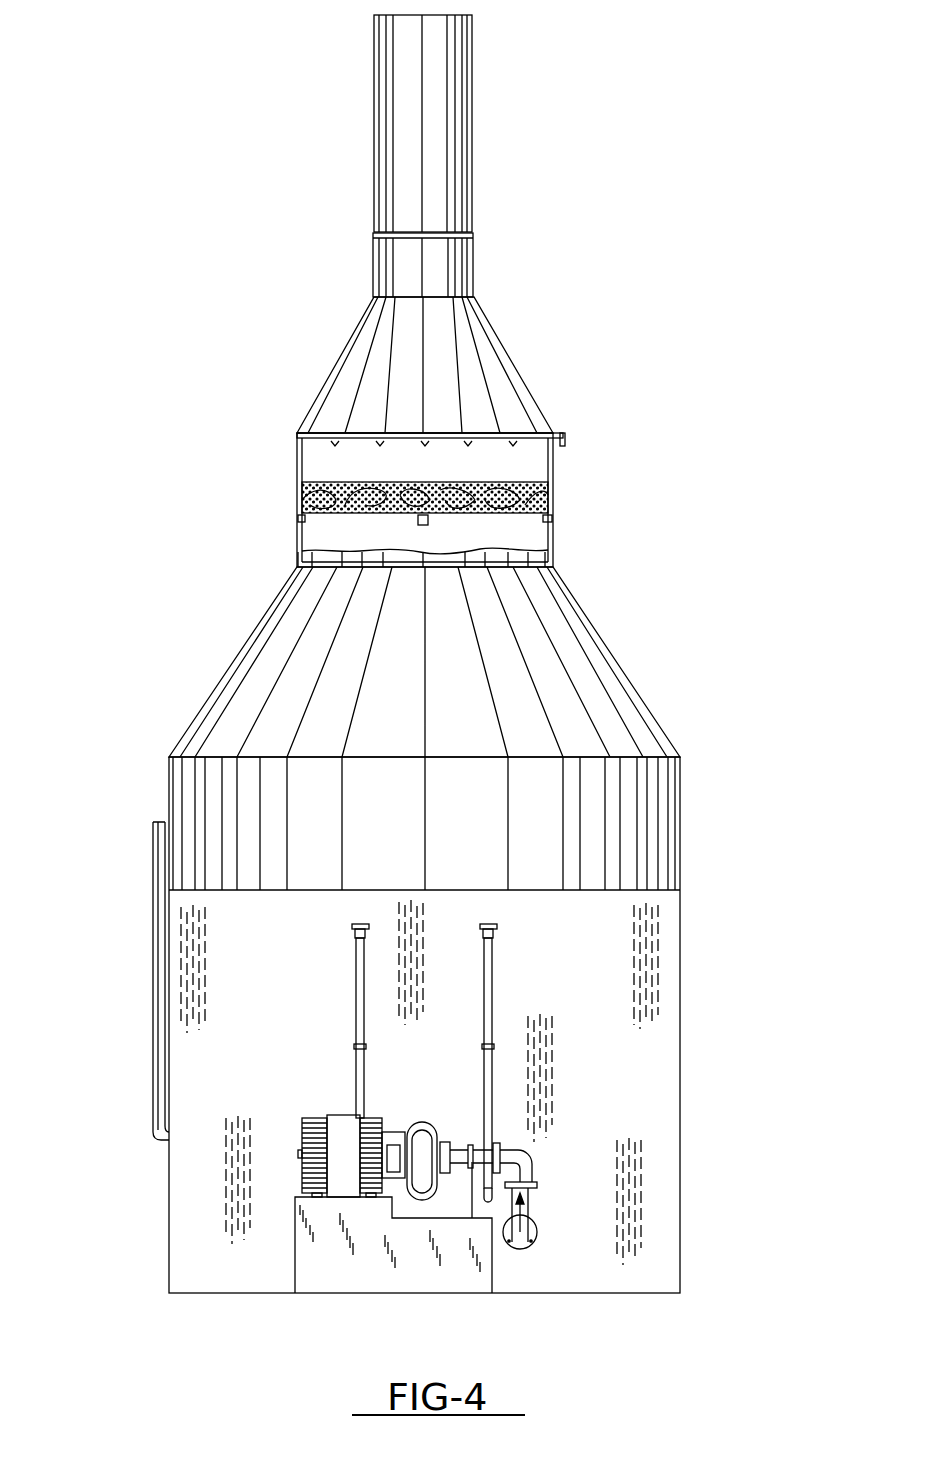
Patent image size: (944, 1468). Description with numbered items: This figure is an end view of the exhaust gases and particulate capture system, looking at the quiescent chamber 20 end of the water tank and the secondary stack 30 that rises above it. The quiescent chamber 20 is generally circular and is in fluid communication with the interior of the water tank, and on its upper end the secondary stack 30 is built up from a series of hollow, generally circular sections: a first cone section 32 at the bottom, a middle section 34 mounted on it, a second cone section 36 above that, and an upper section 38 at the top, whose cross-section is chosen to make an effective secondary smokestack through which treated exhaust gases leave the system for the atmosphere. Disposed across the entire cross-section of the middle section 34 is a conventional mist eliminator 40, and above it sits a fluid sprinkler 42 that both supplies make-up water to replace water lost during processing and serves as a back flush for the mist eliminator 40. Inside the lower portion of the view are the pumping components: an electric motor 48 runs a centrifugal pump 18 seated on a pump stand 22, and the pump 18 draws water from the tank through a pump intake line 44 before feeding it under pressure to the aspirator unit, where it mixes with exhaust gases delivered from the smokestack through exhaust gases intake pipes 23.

The centrifugal pump 18 is at (422, 1135).
The quiescent chamber 20 is at (656, 1036).
The pump stand 22 is at (338, 1273).
The exhaust gases intake pipes 23 is at (360, 1016).
The secondary stack 30 is at (798, 448).
The first cone section 32 is at (577, 690).
The middle section 34 is at (320, 458).
The second cone section 36 is at (480, 358).
The upper section 38 is at (390, 95).
The mist eliminator 40 is at (320, 508).
The fluid sprinkler 42 is at (565, 438).
The pump intake line 44 is at (518, 1167).
The electric motor 48 is at (303, 1133).